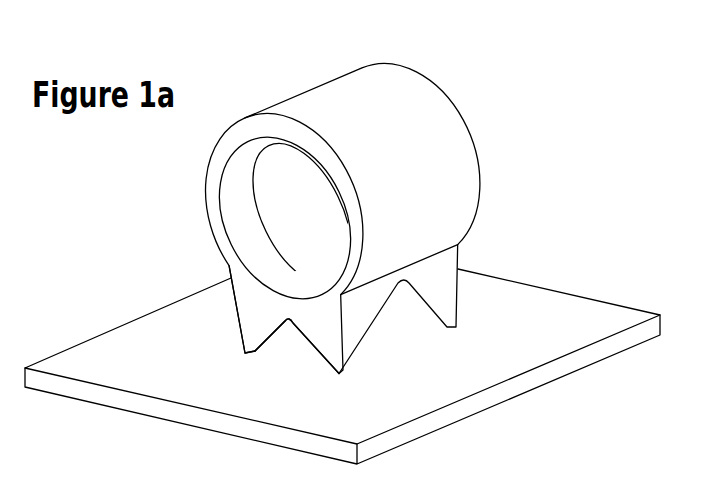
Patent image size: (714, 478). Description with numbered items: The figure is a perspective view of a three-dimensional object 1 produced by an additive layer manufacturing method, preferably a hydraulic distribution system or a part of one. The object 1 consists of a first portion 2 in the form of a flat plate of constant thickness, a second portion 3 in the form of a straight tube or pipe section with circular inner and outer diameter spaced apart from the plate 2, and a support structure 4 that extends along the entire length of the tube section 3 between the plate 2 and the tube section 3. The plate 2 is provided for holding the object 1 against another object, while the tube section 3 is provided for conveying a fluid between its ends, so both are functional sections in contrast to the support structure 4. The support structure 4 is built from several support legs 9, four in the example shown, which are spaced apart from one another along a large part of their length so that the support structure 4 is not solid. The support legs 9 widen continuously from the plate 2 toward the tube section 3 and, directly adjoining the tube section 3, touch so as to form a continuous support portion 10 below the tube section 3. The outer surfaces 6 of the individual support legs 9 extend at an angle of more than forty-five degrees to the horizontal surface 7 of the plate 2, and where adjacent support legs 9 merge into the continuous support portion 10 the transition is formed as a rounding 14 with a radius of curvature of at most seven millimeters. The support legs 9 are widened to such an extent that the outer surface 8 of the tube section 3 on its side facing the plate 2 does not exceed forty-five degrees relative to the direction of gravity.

The three-dimensional object 1 is at (532, 64).
The first portion 2 is at (598, 353).
The second portion 3 is at (362, 97).
The support structure 4 is at (220, 305).
The outer surfaces 6 is at (348, 331).
The horizontal surface 7 is at (525, 332).
The outer surface 8 is at (455, 228).
The support legs 9 is at (250, 317).
The continuous support portion 10 is at (288, 305).
The rounding 14 is at (279, 324).